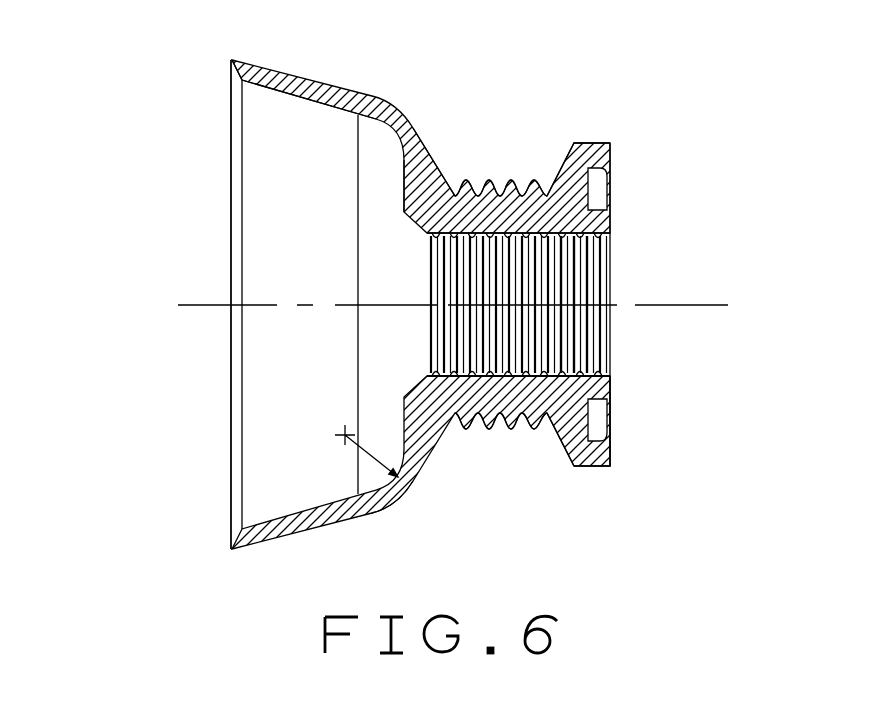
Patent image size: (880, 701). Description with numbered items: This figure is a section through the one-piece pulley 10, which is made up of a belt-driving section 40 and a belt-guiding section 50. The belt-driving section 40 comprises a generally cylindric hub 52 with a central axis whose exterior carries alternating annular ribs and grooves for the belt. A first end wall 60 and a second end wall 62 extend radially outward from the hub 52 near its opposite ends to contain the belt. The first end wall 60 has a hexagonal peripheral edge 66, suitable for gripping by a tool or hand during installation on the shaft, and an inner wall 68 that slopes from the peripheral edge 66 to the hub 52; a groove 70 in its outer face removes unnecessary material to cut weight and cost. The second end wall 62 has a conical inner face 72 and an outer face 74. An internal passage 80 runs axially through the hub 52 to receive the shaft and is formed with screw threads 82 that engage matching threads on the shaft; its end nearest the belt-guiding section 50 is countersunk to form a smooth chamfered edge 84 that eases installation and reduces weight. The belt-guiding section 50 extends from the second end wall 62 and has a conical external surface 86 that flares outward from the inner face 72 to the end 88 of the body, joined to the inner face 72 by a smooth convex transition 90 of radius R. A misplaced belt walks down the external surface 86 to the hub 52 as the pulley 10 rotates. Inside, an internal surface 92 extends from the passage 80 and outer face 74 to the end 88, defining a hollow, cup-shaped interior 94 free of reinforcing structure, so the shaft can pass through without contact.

The pulley 10 is at (567, 88).
The belt-driving section 40 is at (491, 182).
The belt-guiding section 50 is at (330, 73).
The hub 52 is at (467, 427).
The first end wall 60 is at (562, 160).
The second end wall 62 is at (456, 192).
The peripheral edge 66 is at (600, 467).
The inner wall 68 is at (560, 442).
The groove 70 is at (600, 170).
The conical inner face 72 is at (437, 178).
The outer face 74 is at (403, 193).
The internal passage 80 is at (580, 363).
The screw threads 82 is at (565, 264).
The chamfered edge 84 is at (427, 234).
The conical external surface 86 is at (261, 62).
The end 88 is at (230, 97).
The smooth convex transition 90 is at (403, 490).
The internal surface 92 is at (297, 97).
The hollow, cup-shaped interior 94 is at (321, 197).